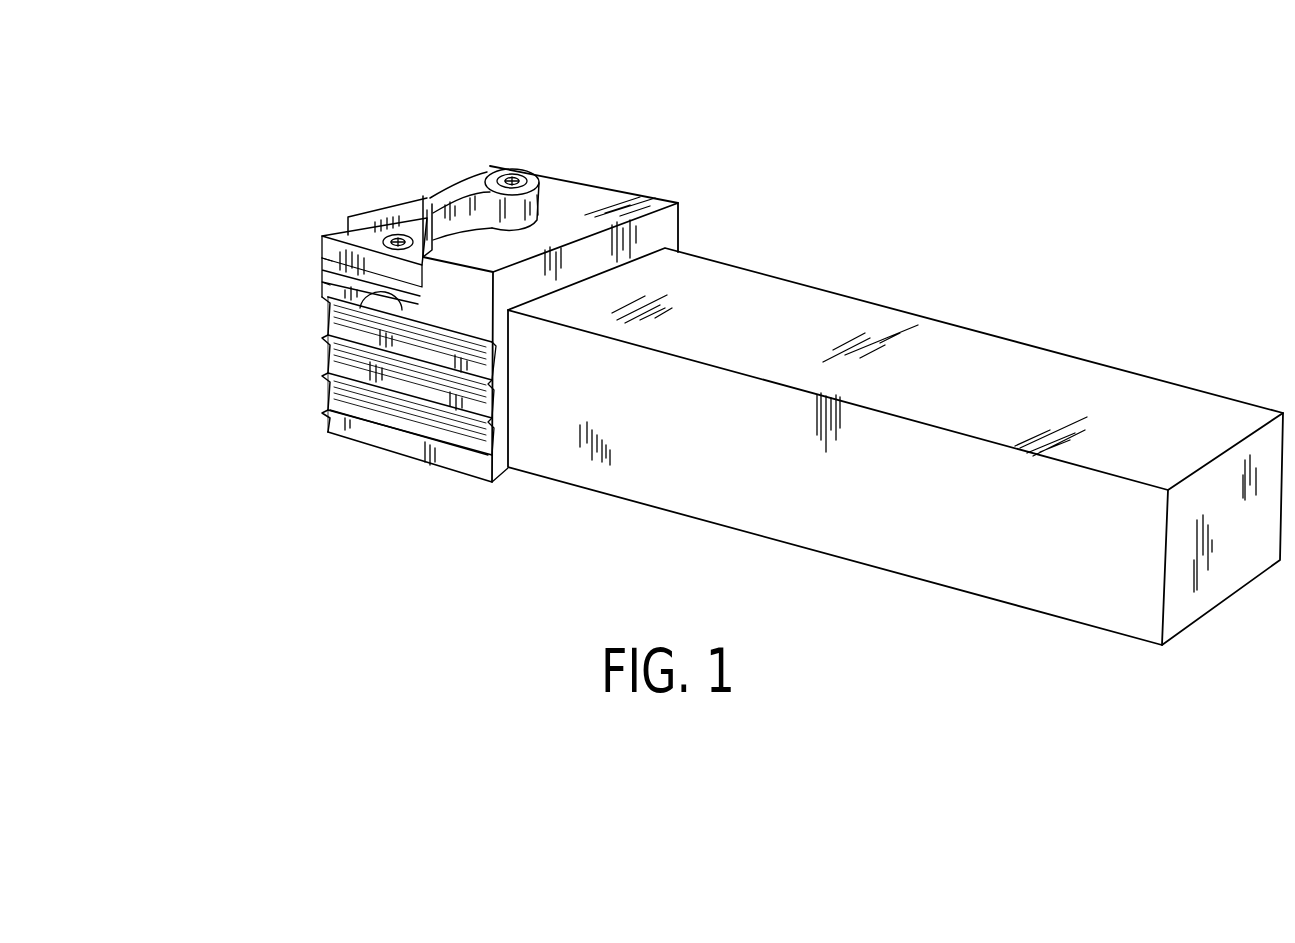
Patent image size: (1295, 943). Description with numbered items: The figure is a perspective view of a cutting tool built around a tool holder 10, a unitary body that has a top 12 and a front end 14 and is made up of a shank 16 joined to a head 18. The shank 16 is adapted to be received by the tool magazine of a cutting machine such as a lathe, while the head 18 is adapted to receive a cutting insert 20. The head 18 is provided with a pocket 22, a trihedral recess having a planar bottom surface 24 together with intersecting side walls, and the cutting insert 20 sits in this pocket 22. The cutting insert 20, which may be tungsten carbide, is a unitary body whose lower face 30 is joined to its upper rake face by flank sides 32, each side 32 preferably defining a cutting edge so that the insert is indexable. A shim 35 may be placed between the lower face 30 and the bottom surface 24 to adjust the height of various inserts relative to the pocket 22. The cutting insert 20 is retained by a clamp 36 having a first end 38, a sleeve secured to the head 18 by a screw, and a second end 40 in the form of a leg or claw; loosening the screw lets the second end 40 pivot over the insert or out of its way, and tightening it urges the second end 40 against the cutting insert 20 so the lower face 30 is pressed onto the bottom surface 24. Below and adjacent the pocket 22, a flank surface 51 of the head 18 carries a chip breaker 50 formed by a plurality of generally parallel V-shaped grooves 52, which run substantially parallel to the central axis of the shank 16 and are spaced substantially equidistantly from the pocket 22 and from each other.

The tool holder 10 is at (970, 86).
The top 12 is at (839, 190).
The front end 14 is at (216, 270).
The shank portion 16 is at (863, 323).
The head portion 18 is at (622, 200).
The cutting insert 20 is at (365, 224).
The pocket 22 is at (311, 298).
The bottom surface 24 is at (330, 338).
The lower face 30 is at (327, 284).
The sides 32 is at (330, 260).
The shim 35 is at (328, 313).
The clamp 36 is at (571, 141).
The first end 38 is at (540, 205).
The second end 40 is at (468, 176).
The chip breaker 50 is at (341, 421).
The flank surface 51 is at (465, 460).
The V-shaped grooves 52 is at (492, 400).